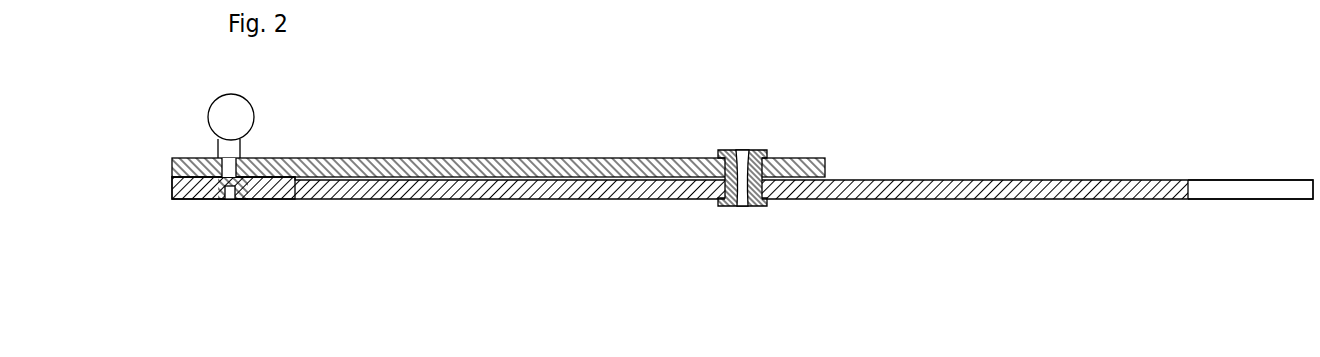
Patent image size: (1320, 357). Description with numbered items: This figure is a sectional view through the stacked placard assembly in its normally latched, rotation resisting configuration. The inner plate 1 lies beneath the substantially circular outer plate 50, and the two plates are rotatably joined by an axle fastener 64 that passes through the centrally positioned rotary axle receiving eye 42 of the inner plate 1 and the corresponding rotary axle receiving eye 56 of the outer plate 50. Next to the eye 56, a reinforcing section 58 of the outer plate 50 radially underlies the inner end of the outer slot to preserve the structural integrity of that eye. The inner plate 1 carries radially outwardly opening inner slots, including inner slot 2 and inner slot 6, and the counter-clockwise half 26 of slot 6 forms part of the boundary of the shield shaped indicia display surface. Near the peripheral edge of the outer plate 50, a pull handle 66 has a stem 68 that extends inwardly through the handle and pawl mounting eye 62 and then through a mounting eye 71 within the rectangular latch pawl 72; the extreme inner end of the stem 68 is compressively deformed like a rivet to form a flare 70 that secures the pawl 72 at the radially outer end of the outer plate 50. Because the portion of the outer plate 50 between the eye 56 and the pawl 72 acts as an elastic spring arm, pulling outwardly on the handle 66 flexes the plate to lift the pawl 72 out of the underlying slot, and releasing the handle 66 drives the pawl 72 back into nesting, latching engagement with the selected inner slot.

The inner plate 1 is at (743, 193).
The inner slot 2 is at (297, 187).
The inner slot 6 is at (1251, 143).
The counter-clockwise half of inner slot 26 is at (1219, 188).
The rotary axle receiving eye 42 is at (767, 190).
The outer plate 50 is at (470, 162).
The rotary axle receiving eye 56 is at (723, 168).
The reinforcing section 58 is at (793, 165).
The handle and pawl mounting eye 62 is at (217, 167).
The axle fastener 64 is at (744, 193).
The pull handle 66 is at (222, 105).
The stem 68 is at (233, 149).
The flare 70 is at (225, 192).
The mounting eye 71 is at (238, 185).
The latch pawl 72 is at (192, 192).